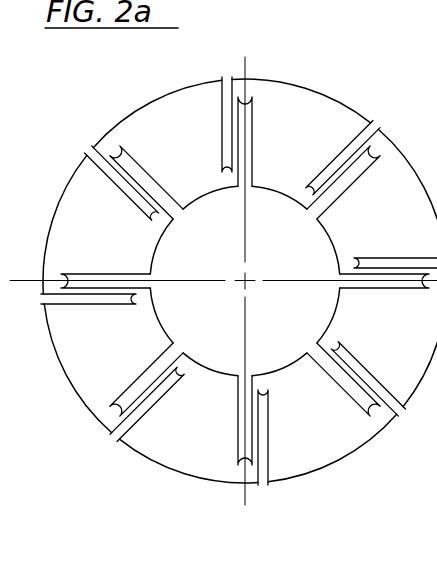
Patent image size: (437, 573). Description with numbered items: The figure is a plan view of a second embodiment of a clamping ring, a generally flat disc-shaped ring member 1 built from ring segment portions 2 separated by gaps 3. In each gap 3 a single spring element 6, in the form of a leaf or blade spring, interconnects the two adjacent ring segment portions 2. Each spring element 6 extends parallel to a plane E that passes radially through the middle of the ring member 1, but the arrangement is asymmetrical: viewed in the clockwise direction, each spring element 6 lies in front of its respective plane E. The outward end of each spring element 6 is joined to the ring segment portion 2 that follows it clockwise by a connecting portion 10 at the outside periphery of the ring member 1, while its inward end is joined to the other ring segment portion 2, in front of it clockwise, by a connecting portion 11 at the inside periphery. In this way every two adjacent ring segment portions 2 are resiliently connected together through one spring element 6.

The ring member 1 is at (159, 501).
The ring segment portions 2 is at (112, 358).
The gaps 3 is at (223, 79).
The spring elements 6 is at (345, 161).
The connecting portion 10 is at (102, 137).
The connecting portion 11 is at (185, 356).
The plane E is at (180, 278).